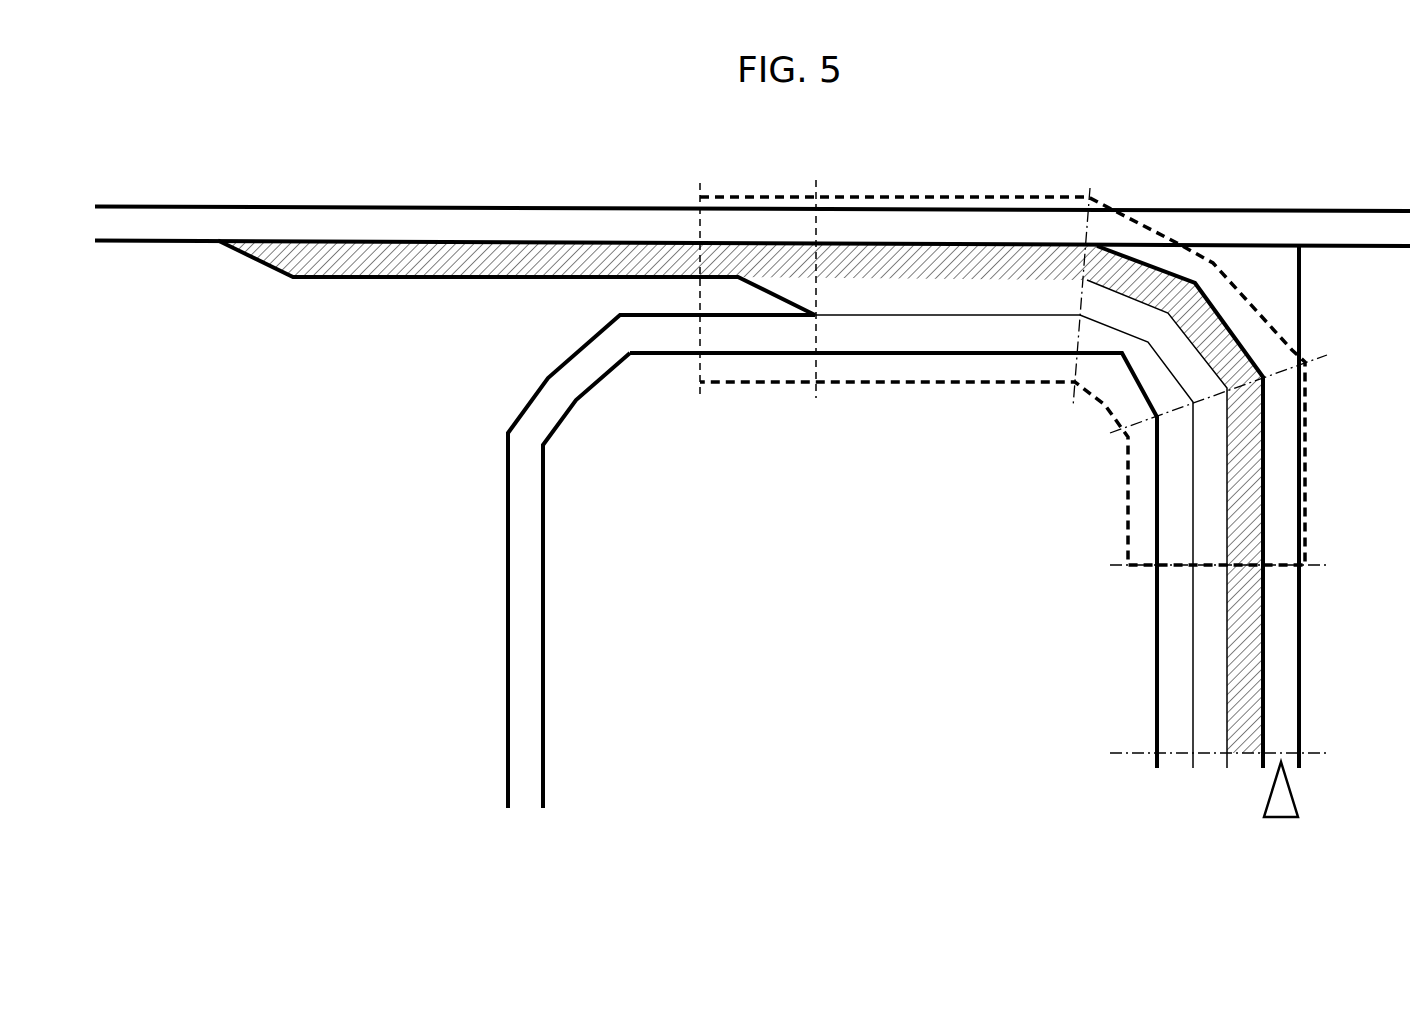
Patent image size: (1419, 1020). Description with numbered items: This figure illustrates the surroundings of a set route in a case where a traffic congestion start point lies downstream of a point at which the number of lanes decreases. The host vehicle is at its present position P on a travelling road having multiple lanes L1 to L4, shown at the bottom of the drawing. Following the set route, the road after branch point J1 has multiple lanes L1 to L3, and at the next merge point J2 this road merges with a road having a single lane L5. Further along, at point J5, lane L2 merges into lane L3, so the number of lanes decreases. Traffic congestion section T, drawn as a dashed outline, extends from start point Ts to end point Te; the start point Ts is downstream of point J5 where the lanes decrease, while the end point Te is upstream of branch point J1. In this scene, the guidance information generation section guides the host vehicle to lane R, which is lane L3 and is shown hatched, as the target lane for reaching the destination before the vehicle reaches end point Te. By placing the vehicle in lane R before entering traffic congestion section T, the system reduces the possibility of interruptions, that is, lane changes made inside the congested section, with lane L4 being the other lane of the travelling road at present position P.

The lane R is at (375, 255).
The lane L1 is at (1170, 670).
The lane L2 is at (1205, 628).
The lane L3 is at (1255, 628).
The lane L4 is at (1292, 670).
The lane L5 is at (1337, 227).
The traffic congestion section T is at (830, 384).
The start point Ts is at (708, 308).
The end point Te is at (1237, 567).
The branch point J1 is at (1234, 388).
The merge point J2 is at (1087, 285).
The point J5 is at (813, 279).
The present position P is at (1230, 779).